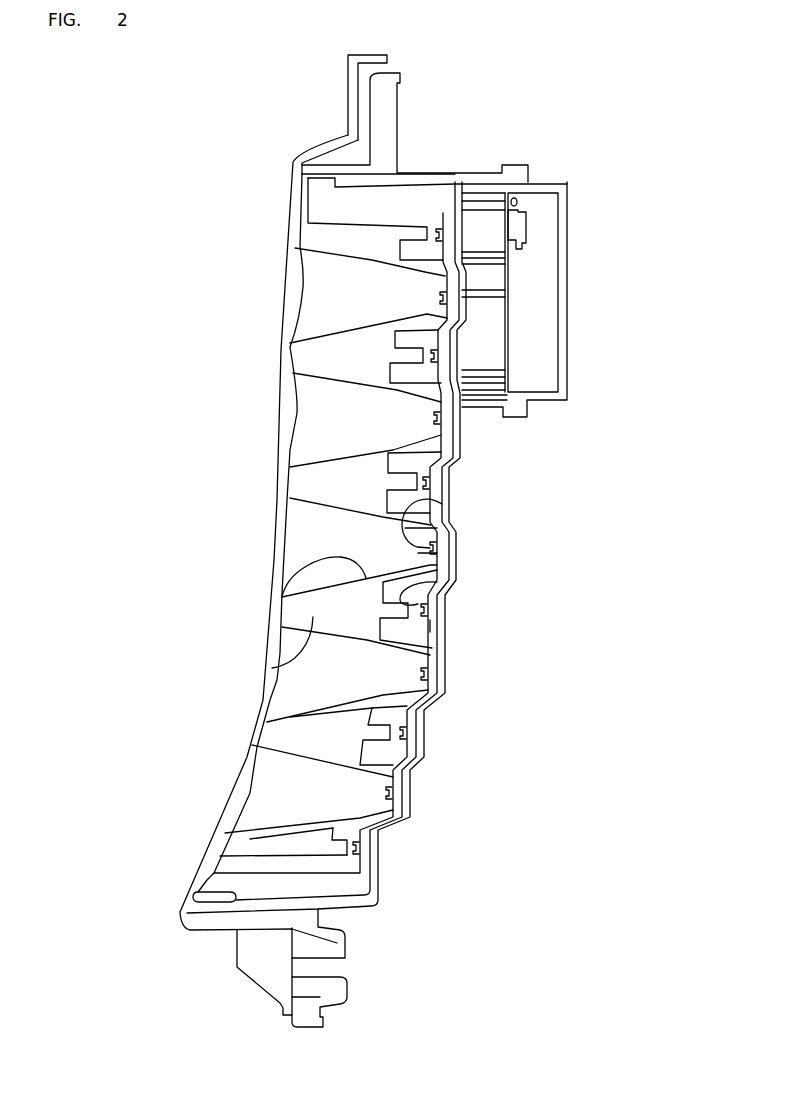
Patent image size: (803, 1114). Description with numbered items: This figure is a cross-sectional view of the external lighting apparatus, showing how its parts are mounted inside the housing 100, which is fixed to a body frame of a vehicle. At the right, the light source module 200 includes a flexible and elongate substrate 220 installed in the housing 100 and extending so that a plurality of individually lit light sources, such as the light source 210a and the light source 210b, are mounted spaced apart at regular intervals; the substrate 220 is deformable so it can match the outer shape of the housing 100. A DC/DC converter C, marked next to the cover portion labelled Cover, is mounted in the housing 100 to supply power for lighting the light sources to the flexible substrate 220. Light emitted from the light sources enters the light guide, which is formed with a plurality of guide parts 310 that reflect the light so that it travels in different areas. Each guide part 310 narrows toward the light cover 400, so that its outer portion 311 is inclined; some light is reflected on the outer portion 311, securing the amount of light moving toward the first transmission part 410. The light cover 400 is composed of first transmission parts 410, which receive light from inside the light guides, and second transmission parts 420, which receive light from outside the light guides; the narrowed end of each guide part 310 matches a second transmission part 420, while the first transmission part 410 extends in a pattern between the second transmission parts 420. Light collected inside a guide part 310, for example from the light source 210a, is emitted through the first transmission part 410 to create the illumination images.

The housing 100 is at (363, 901).
The light source module 200 is at (428, 545).
The light source 210a is at (440, 584).
The light source 210b is at (442, 504).
The flexible substrate 220 is at (428, 628).
The guide part 310 is at (313, 363).
The outer portion 311 is at (282, 597).
The light cover 400 is at (219, 492).
The first transmission part 410 is at (268, 489).
The second transmission part 420 is at (275, 543).
The DC/DC converter C is at (485, 232).
The cover Cover is at (567, 278).